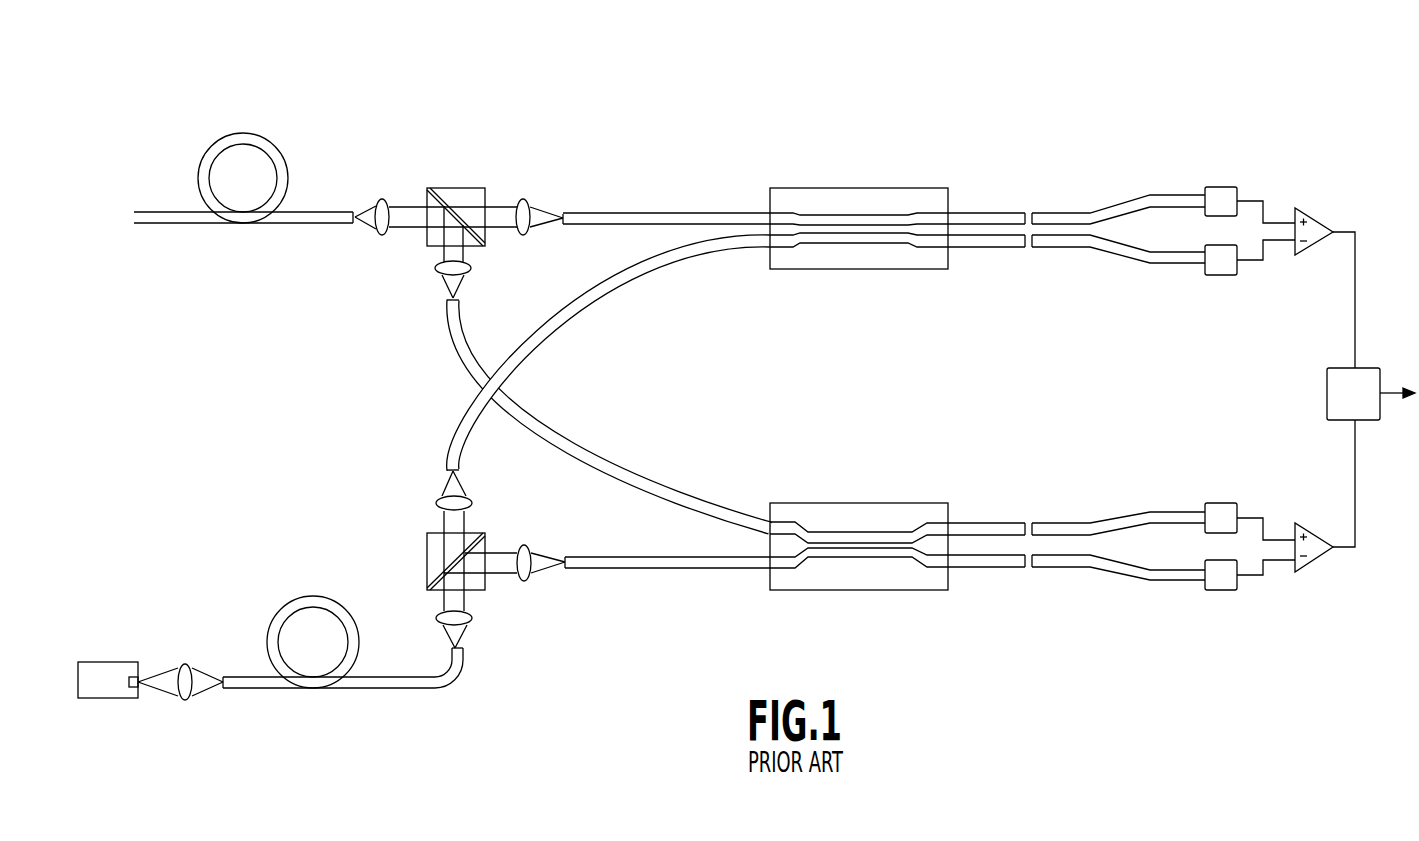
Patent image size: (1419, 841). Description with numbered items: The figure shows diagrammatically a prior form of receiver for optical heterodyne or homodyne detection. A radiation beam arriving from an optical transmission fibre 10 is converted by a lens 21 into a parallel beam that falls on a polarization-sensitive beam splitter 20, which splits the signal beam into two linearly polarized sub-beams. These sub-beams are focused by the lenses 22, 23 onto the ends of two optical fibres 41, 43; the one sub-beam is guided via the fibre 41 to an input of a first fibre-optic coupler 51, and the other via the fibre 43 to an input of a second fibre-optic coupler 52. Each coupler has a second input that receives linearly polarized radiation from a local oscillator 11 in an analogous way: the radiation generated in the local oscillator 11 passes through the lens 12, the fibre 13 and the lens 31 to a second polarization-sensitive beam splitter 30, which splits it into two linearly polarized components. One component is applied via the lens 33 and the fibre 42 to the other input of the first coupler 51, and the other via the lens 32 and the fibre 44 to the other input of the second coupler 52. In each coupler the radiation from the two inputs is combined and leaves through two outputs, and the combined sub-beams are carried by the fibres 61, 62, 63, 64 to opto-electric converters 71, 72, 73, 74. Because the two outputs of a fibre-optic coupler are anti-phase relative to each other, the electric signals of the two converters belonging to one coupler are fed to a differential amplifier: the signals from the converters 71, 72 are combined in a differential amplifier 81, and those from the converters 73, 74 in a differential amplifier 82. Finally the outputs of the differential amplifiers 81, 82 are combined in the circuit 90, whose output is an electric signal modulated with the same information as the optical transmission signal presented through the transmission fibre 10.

The optical transmission fibre 10 is at (252, 224).
The local oscillator 11 is at (108, 693).
The lens 12 is at (187, 701).
The fibre 13 is at (328, 684).
The polarization-sensitive beam splitter 20 is at (452, 188).
The lens 21 is at (380, 236).
The lens 22 is at (472, 270).
The lens 23 is at (523, 199).
The second polarization-sensitive beam splitter 30 is at (427, 550).
The lens 31 is at (433, 620).
The lens 32 is at (527, 578).
The lens 33 is at (474, 503).
The optical fibre 41 is at (667, 213).
The fibre 42 is at (636, 266).
The optical fibre 43 is at (630, 494).
The fibre 44 is at (670, 566).
The first fibre-optic coupler 51 is at (864, 258).
The second fibre-optic coupler 52 is at (845, 510).
The fibre 61 is at (1118, 209).
The fibre 62 is at (1117, 249).
The fibre 63 is at (1119, 521).
The fibre 64 is at (1118, 568).
The opto-electric converter 71 is at (1219, 196).
The opto-electric converter 72 is at (1222, 268).
The opto-electric converter 73 is at (1219, 508).
The opto-electric converter 74 is at (1220, 585).
The differential amplifier 81 is at (1318, 221).
The differential amplifier 82 is at (1316, 535).
The circuit 90 is at (1327, 393).